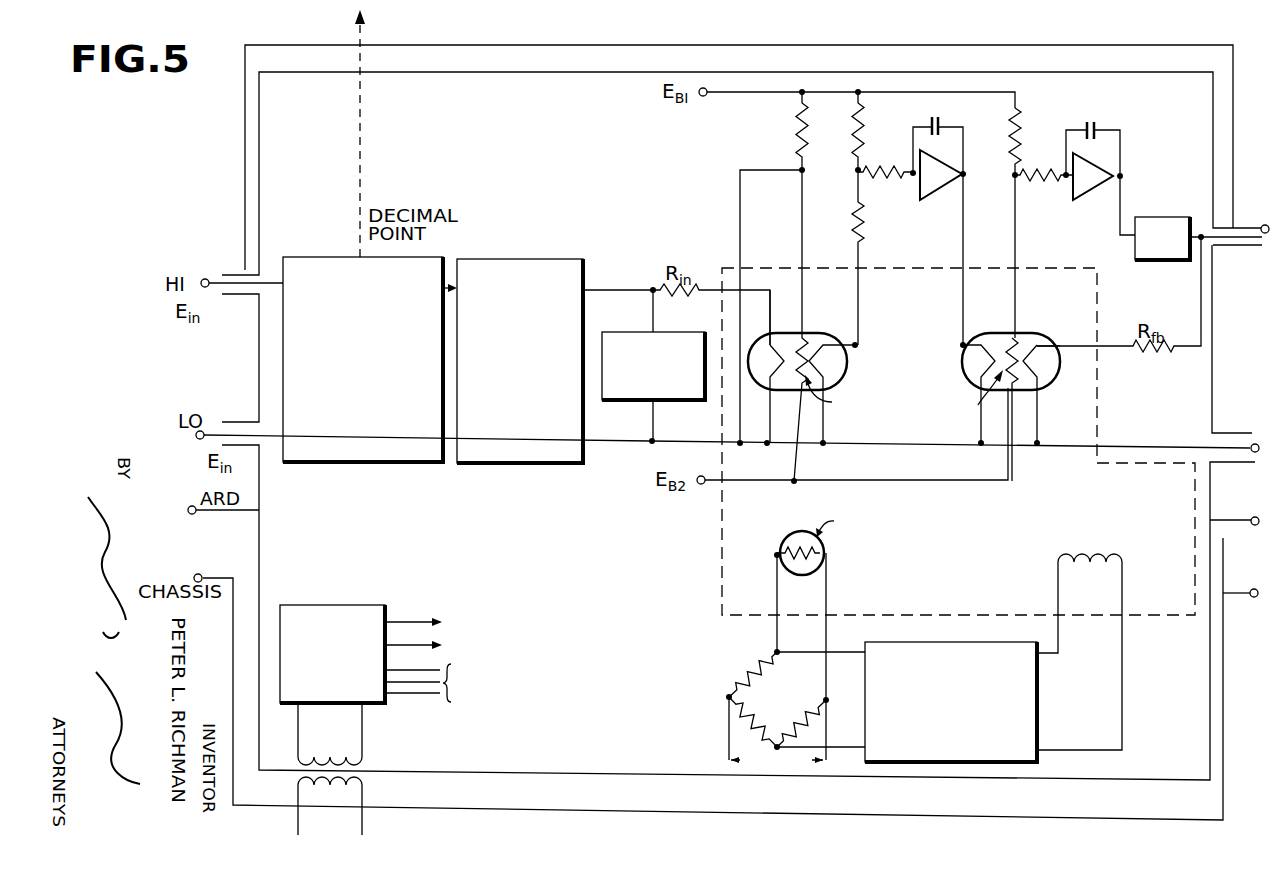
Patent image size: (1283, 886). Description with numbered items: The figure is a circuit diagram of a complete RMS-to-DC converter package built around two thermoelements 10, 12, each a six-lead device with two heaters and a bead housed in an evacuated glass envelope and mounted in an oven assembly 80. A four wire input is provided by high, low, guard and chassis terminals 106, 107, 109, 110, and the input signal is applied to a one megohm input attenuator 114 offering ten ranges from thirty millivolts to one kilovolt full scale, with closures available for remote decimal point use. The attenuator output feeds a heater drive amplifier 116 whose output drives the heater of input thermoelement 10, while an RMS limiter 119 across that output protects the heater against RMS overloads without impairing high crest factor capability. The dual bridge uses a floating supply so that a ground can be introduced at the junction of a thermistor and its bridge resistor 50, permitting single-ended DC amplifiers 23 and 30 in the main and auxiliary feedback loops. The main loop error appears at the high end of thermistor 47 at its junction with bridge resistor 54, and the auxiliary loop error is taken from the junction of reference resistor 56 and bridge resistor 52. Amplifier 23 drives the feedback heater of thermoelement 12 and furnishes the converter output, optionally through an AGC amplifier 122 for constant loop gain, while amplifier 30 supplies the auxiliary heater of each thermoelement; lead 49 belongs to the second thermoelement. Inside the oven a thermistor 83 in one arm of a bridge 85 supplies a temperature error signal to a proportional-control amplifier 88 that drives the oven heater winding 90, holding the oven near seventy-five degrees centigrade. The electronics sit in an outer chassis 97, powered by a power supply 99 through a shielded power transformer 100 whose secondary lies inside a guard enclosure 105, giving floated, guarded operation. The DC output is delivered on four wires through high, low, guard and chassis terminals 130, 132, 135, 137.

The input thermoelement 10 is at (805, 333).
The feedback thermoelement 12 is at (1020, 333).
The main loop DC amplifier 23 is at (1092, 193).
The auxiliary loop DC amplifier 30 is at (938, 194).
The thermistor 47 is at (772, 392).
The heater lead of thermistor T2 49 is at (1030, 391).
The bridge resistor 50 is at (808, 131).
The bridge resistor 52 is at (866, 132).
The bridge resistor 54 is at (1021, 131).
The reference resistor 56 is at (864, 214).
The oven assembly 80 is at (1148, 618).
The thermistor 83 is at (777, 556).
The bridge 85 is at (734, 678).
The proportional-control amplifier 88 is at (1039, 716).
The oven heater winding 90 is at (1078, 570).
The outer chassis 97 is at (792, 812).
The power supply 99 is at (337, 605).
The shielded power transformer 100 is at (364, 779).
The guard enclosure 105 is at (644, 776).
The high input terminal 106 is at (222, 276).
The low input terminal 107 is at (209, 430).
The guard input terminal 109 is at (228, 511).
The chassis input terminal 110 is at (222, 577).
The input attenuator 114 is at (412, 464).
The heater drive amplifier 116 is at (490, 465).
The RMS limiter 119 is at (648, 410).
The AGC amplifier 122 is at (1150, 217).
The high output terminal 130 is at (1248, 227).
The low output terminal 132 is at (1240, 443).
The guard output terminal 135 is at (1252, 518).
The chassis output terminal 137 is at (1243, 592).